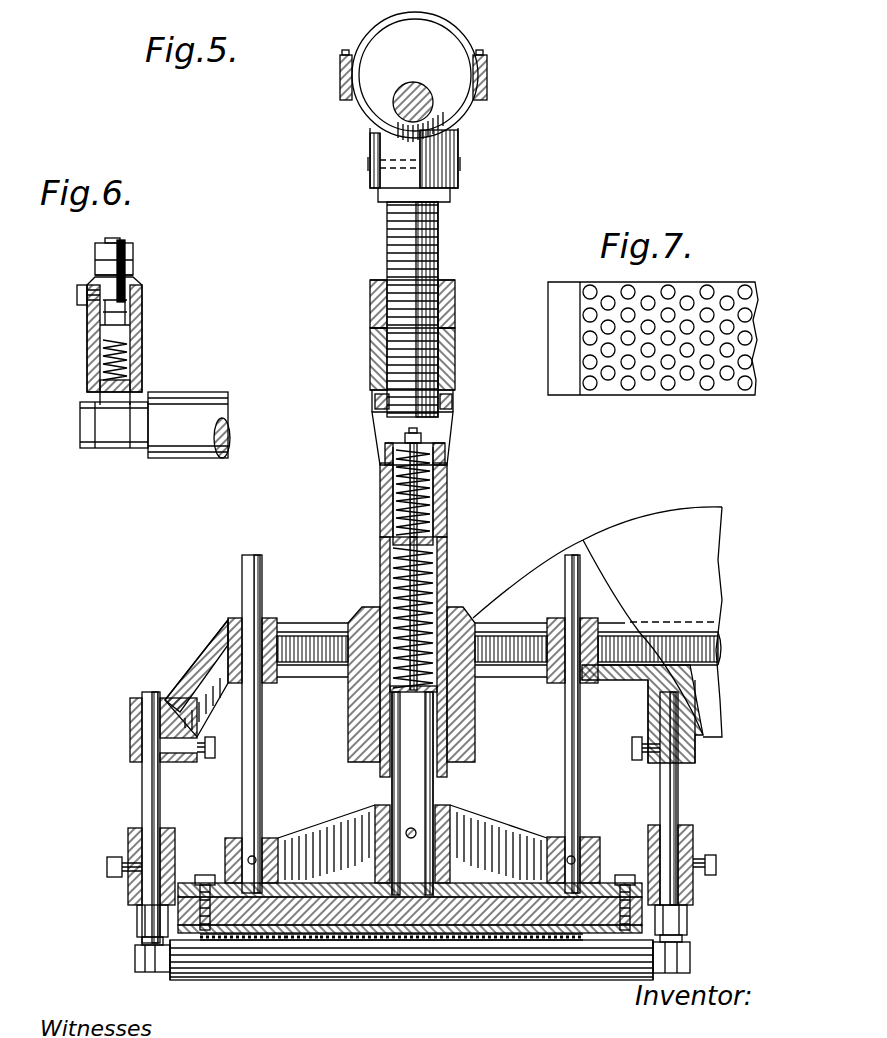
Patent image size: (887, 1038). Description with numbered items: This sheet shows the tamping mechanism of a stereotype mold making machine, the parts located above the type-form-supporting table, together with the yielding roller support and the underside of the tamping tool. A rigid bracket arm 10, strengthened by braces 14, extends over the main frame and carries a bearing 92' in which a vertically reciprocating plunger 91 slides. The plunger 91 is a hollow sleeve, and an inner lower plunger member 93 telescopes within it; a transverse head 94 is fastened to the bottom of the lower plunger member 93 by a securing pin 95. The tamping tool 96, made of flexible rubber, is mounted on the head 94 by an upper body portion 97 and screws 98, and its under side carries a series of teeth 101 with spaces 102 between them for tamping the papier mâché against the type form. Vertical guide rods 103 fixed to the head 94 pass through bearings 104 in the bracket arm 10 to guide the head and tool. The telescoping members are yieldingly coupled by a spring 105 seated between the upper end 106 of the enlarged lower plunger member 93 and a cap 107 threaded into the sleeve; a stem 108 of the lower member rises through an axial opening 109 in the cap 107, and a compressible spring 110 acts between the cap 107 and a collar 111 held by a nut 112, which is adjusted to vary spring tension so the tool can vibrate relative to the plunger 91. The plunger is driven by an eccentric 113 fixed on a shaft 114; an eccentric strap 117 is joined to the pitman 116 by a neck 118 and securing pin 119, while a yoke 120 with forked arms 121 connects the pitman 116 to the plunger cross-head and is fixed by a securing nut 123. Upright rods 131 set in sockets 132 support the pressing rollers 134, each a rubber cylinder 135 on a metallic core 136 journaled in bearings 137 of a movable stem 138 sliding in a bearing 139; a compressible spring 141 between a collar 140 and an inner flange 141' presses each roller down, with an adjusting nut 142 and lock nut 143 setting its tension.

In FIG. 5, the bracket arm 10 is at (508, 633).
In FIG. 5, the braces 14 is at (640, 543).
In FIG. 5, the plunger 91 is at (447, 567).
In FIG. 5, the bearing 92' is at (392, 689).
In FIG. 5, the lower plunger member 93 is at (430, 790).
In FIG. 5, the head 94 is at (320, 843).
In FIG. 5, the securing pin 95 is at (415, 833).
In FIG. 5, the tamping tool 96 is at (340, 942).
In FIG. 7, the tamping tool 96 is at (572, 385).
In FIG. 5, the upper body portion 97 is at (207, 915).
In FIG. 5, the screws 98 is at (205, 875).
In FIG. 5, the teeth 101 is at (287, 943).
In FIG. 7, the teeth 101 is at (608, 380).
In FIG. 5, the spaces 102 is at (252, 943).
In FIG. 7, the spaces 102 is at (727, 373).
In FIG. 5, the guide rods 103 is at (347, 740).
In FIG. 5, the bearings 104 is at (265, 618).
In FIG. 5, the spring 105 is at (427, 587).
In FIG. 5, the upper end 106 is at (393, 690).
In FIG. 5, the cap 107 is at (380, 552).
In FIG. 5, the stem 108 is at (420, 436).
In FIG. 5, the axial opening 109 is at (440, 527).
In FIG. 5, the compressible spring 110 is at (380, 478).
In FIG. 5, the collar 111 is at (398, 443).
In FIG. 5, the nut 112 is at (372, 430).
In FIG. 5, the eccentric 113 is at (437, 43).
In FIG. 5, the shaft 114 is at (395, 107).
In FIG. 5, the pitman 116 is at (395, 222).
In FIG. 5, the eccentric strap 117 is at (368, 33).
In FIG. 5, the neck 118 is at (375, 146).
In FIG. 5, the securing pin 119 is at (368, 165).
In FIG. 5, the yoke 120 is at (373, 350).
In FIG. 5, the forked arms 121 is at (380, 438).
In FIG. 5, the securing nut 123 is at (458, 290).
In FIG. 5, the upright rods 131 is at (147, 796).
In FIG. 5, the sockets 132 is at (133, 712).
In FIG. 5, the pressing rollers 134 is at (494, 988).
In FIG. 6, the pressing rollers 134 is at (185, 460).
In FIG. 5, the cylinders 135 is at (570, 955).
In FIG. 6, the cylinders 135 is at (220, 460).
In FIG. 5, the core 136 is at (165, 975).
In FIG. 5, the bearings 137 is at (148, 968).
In FIG. 6, the bearings 137 is at (118, 450).
In FIG. 5, the stem 138 is at (137, 943).
In FIG. 6, the stem 138 is at (117, 242).
In FIG. 5, the bearing 139 is at (137, 930).
In FIG. 6, the bearing 139 is at (90, 340).
In FIG. 6, the collar 140 is at (145, 375).
In FIG. 6, the compressible spring 141 is at (156, 354).
In FIG. 6, the inner flange 141' is at (158, 312).
In FIG. 6, the adjusting nut 142 is at (133, 268).
In FIG. 6, the lock nut 143 is at (133, 252).